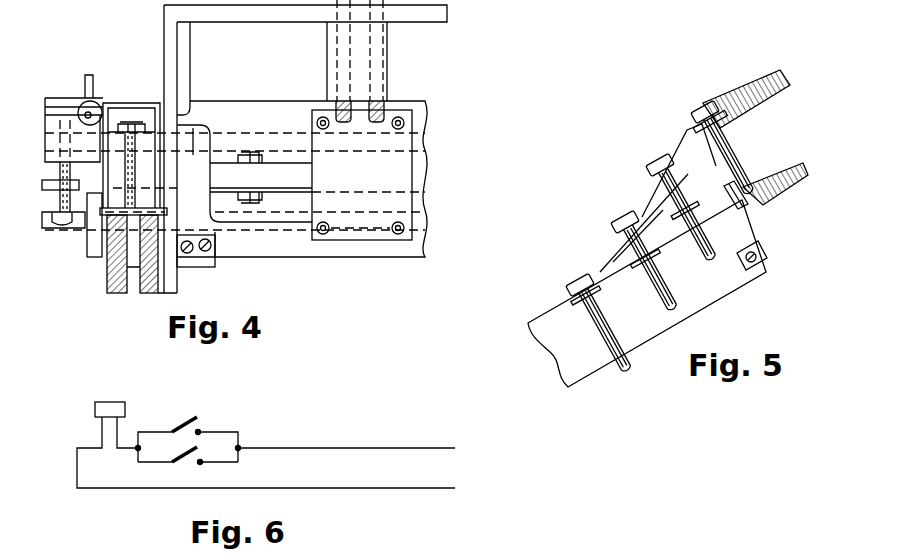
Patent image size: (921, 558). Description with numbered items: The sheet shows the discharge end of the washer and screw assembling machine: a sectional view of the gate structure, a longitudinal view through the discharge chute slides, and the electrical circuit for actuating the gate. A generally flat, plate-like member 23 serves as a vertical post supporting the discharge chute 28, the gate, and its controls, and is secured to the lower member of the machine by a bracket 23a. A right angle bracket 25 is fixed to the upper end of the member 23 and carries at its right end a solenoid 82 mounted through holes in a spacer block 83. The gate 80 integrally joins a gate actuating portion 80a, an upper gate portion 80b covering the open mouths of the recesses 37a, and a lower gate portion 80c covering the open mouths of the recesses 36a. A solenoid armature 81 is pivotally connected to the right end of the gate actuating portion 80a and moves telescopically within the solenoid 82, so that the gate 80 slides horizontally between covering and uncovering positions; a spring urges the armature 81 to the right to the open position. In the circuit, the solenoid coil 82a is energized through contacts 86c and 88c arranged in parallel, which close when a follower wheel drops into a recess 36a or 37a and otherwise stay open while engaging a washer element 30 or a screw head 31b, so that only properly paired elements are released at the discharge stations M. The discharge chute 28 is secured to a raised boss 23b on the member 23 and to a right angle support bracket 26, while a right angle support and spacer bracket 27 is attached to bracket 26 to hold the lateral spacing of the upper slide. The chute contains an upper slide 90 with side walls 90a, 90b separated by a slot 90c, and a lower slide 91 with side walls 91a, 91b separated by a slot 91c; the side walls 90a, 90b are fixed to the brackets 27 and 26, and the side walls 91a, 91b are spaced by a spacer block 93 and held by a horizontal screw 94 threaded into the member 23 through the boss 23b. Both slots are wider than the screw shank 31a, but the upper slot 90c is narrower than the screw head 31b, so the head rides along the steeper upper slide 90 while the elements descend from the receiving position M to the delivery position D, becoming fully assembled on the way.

In FIG. 4, the plate-like member 23 is at (166, 66).
In FIG. 4, the bracket 23a is at (217, 263).
In FIG. 4, the boss 23b is at (150, 294).
In FIG. 4, the right angle bracket 25 is at (272, 20).
In FIG. 4, the right angle support bracket 26 is at (120, 103).
In FIG. 4, the right angle support and spacer bracket 27 is at (61, 112).
In FIG. 4, the discharge chute 28 is at (90, 324).
In FIG. 5, the washer element 30 is at (705, 215).
In FIG. 4, the screw shank 31a is at (130, 188).
In FIG. 5, the screw shank 31a is at (617, 374).
In FIG. 4, the screw head 31b is at (133, 122).
In FIG. 5, the screw head 31b is at (575, 282).
In FIG. 5, the recess 36a is at (772, 172).
In FIG. 5, the recess 37a is at (724, 110).
In FIG. 4, the gate 80 is at (238, 194).
In FIG. 4, the gate actuating portion 80a is at (233, 167).
In FIG. 4, the upper gate portion 80b is at (192, 119).
In FIG. 5, the upper gate portion 80b is at (690, 118).
In FIG. 4, the lower gate portion 80c is at (220, 228).
In FIG. 5, the lower gate portion 80c is at (752, 200).
In FIG. 4, the solenoid armature 81 is at (308, 181).
In FIG. 4, the solenoid 82 is at (362, 175).
In FIG. 6, the solenoid coil 82a is at (115, 402).
In FIG. 4, the spacer block 83 is at (396, 70).
In FIG. 6, the contacts 86c is at (210, 422).
In FIG. 6, the contacts 88c is at (197, 465).
In FIG. 4, the upper slide 90 is at (244, 173).
In FIG. 5, the upper slide 90 is at (710, 294).
In FIG. 4, the side wall 90a is at (113, 178).
In FIG. 5, the side wall 90a is at (683, 148).
In FIG. 4, the side wall 90b is at (152, 162).
In FIG. 4, the upper slot 90c is at (213, 223).
In FIG. 5, the lower slide 91 is at (657, 207).
In FIG. 4, the side wall 91a is at (130, 284).
In FIG. 5, the side wall 91a is at (650, 326).
In FIG. 4, the side wall 91b is at (152, 260).
In FIG. 4, the lower slot 91c is at (130, 251).
In FIG. 4, the spacer block 93 is at (133, 288).
In FIG. 5, the spacer block 93 is at (763, 273).
In FIG. 5, the screw 94 is at (757, 256).
In FIG. 4, the discharge stations M is at (76, 258).
In FIG. 5, the discharge stations M is at (670, 133).
In FIG. 5, the delivery position D is at (601, 258).